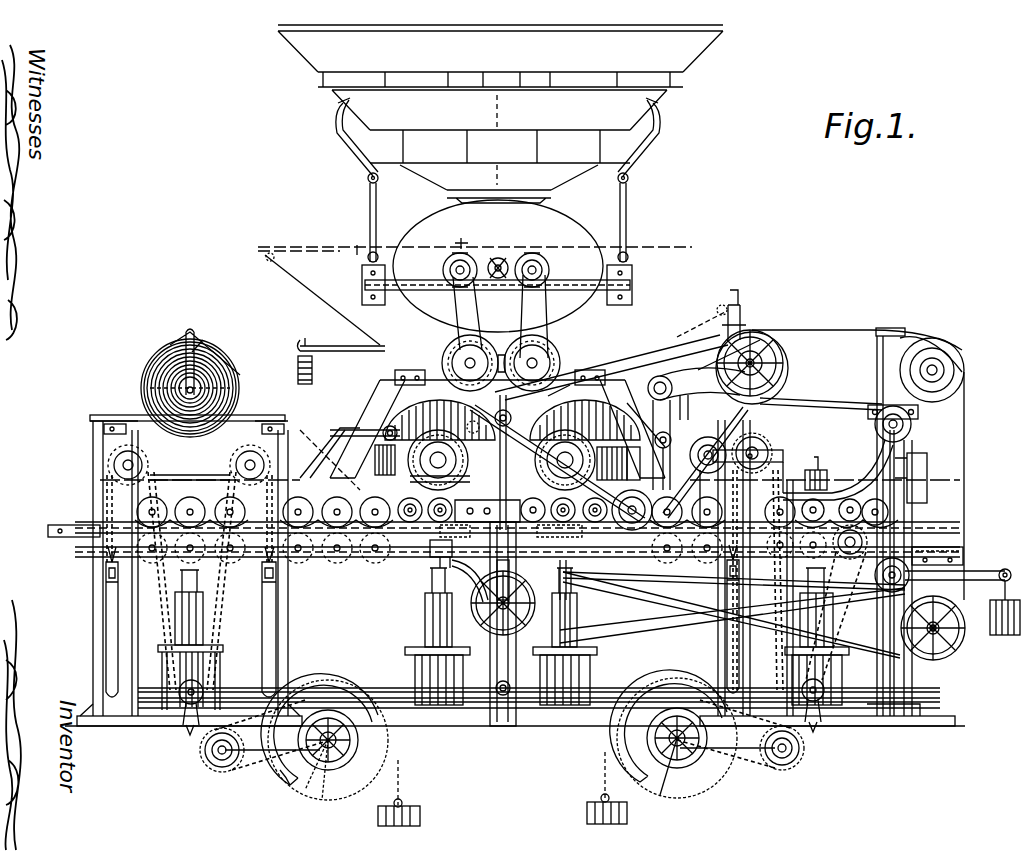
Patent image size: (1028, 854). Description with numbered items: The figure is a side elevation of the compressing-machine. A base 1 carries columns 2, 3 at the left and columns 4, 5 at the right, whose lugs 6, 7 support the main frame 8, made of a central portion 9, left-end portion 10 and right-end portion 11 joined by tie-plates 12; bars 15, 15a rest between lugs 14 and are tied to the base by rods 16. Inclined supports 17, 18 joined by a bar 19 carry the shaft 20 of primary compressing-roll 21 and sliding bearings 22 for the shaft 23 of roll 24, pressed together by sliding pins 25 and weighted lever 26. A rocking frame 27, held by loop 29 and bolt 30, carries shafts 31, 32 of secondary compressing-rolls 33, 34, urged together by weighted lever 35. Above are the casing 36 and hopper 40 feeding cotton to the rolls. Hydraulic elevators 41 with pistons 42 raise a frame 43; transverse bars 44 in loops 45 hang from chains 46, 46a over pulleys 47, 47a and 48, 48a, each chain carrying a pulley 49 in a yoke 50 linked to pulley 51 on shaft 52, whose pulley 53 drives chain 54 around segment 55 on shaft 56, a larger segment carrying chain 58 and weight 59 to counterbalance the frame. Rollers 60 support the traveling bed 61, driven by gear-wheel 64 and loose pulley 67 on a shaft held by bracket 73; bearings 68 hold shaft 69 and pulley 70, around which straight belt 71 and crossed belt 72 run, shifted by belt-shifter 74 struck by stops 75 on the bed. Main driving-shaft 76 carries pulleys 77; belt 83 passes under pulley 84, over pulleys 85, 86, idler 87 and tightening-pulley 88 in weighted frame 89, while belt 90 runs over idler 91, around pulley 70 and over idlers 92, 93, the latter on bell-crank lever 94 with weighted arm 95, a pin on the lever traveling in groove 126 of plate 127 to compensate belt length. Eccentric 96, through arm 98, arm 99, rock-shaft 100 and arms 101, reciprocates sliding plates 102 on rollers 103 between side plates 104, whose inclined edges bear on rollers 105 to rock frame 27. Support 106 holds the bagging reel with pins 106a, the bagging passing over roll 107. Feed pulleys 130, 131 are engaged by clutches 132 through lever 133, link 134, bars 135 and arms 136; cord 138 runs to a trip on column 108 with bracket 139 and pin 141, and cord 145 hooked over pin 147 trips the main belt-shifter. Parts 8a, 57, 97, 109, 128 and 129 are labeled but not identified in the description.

The base 1 is at (98, 728).
The upright column 2 is at (80, 647).
The upright column 3 is at (507, 80).
The column 4 is at (729, 514).
The column 5 is at (840, 522).
The lug 6 is at (80, 505).
The lug 7 is at (110, 515).
The main frame 8 is at (300, 825).
The lower roller 8a is at (516, 533).
The central portion 9 is at (327, 454).
The left-end portion 10 is at (190, 474).
The right-end portion 11 is at (758, 580).
The lugs 14 is at (160, 567).
The bars 15 is at (95, 458).
The cross-bar 15a is at (250, 453).
The rods 16 is at (133, 625).
The inclined support 17 is at (497, 429).
The inclined support 18 is at (648, 435).
The bar 19 is at (500, 385).
The shaft 20 is at (546, 363).
The primary compressing-roll 21 is at (560, 345).
The bearings 22 is at (458, 340).
The shaft 23 is at (478, 342).
The primary compressing-roll 24 is at (511, 346).
The sliding pins 25 is at (348, 439).
The weighted lever 26 is at (342, 353).
The rocking frame 27 is at (431, 436).
The U-shaped strap 29 is at (496, 462).
The bolt 30 is at (489, 419).
The shaft 31 is at (565, 460).
The shaft 32 is at (438, 460).
The secondary compressing-roll 33 is at (635, 463).
The secondary compressing-roll 34 is at (388, 464).
The weighted lever 35 is at (330, 460).
The casing 36 is at (498, 266).
The hopper 40 is at (494, 140).
The hydraulic elevators 41 is at (503, 677).
The pistons 42 is at (504, 607).
The frame 43 is at (539, 625).
The bars 44 is at (105, 575).
The loops 45 is at (108, 583).
The chain 46 is at (213, 576).
The chain 46a is at (813, 616).
The pulley 47 is at (110, 445).
The pulley 47a is at (262, 435).
The pulley 48 is at (928, 528).
The pulley 48a is at (889, 533).
The pulley 49 is at (180, 685).
The yoke 50 is at (188, 732).
The pulley 51 is at (513, 759).
The shaft 52 is at (500, 768).
The second pulley 53 is at (220, 762).
The chain 54 is at (502, 735).
The segment 55 is at (504, 769).
The shaft 56 is at (510, 739).
The fly wheel 57 is at (345, 682).
The chain 58 is at (425, 745).
The weight 59 is at (517, 811).
The rollers 60 is at (791, 528).
The bed 61 is at (46, 529).
The gear-wheel 64 is at (496, 603).
The pulley 67 is at (516, 580).
The bearings 68 is at (960, 582).
The shaft 69 is at (949, 632).
The pulley 70 is at (945, 645).
The straight belt 71 is at (732, 620).
The crossed belt 72 is at (731, 615).
The bracket 73 is at (470, 581).
The belt-shifter 74 is at (573, 572).
The stops 75 is at (60, 540).
The main driving-shaft 76 is at (784, 357).
The pulley 77 is at (720, 326).
The belt 83 is at (609, 424).
The pulley 84 is at (555, 393).
The pulley 85 is at (612, 463).
The pulley 86 is at (440, 486).
The idler 87 is at (632, 510).
The tightening-pulley 88 is at (706, 450).
The frame 89 is at (770, 452).
The belt 90 is at (870, 459).
The idler 91 is at (932, 370).
The idler 92 is at (876, 580).
The idler 93 is at (912, 428).
The bell-crank lever 94 is at (920, 416).
The secondary arm 95 is at (997, 608).
The eccentric 96 is at (788, 385).
The belt 97 is at (821, 406).
The arm 98 is at (696, 379).
The arm 99 is at (680, 407).
The rock-shaft 100 is at (667, 433).
The arm 101 is at (666, 469).
The sliding plate 102 is at (504, 501).
The rollers 103 is at (506, 521).
The side plates 104 is at (501, 505).
The rollers 105 is at (512, 421).
The support 106 is at (190, 388).
The pins 106a is at (160, 382).
The roll 107 is at (205, 352).
The column 108 is at (495, 740).
The collar 109 is at (489, 682).
The groove 126 is at (845, 480).
The plate 127 is at (863, 500).
The belt 128 is at (542, 316).
The belt 129 is at (478, 313).
The pulley 130 is at (545, 256).
The pulley 131 is at (455, 255).
The clutch 132 is at (497, 282).
The lever 133 is at (320, 243).
The link connection 134 is at (357, 241).
The bars 135 is at (464, 234).
The arm 136 is at (502, 258).
The cord 138 is at (322, 299).
The bracket 139 is at (559, 528).
The pin 141 is at (435, 560).
The cord 145 is at (686, 323).
The pin 147 is at (734, 581).
The tie-plates 12 is at (594, 617).